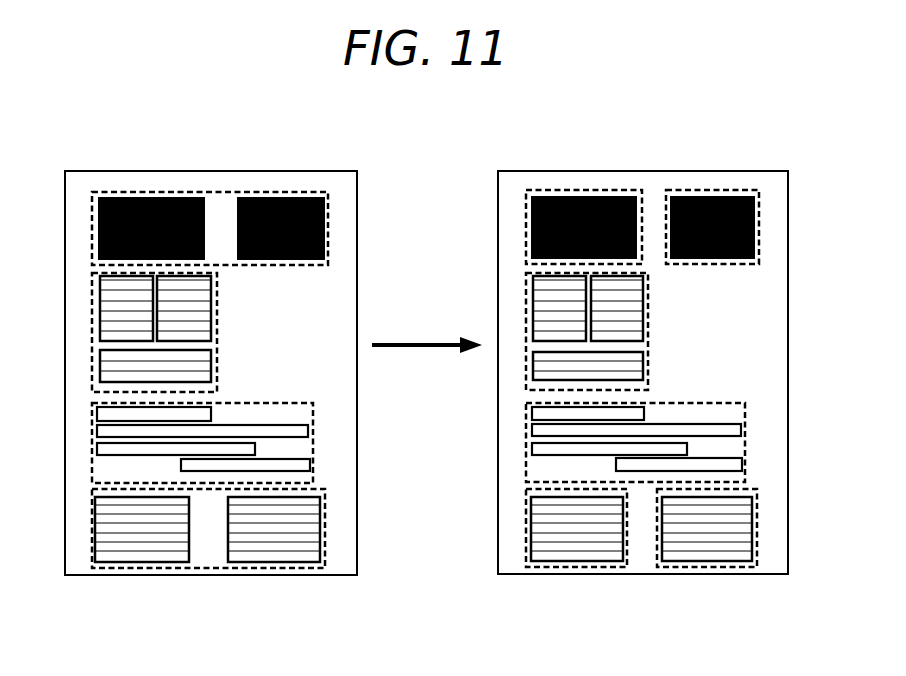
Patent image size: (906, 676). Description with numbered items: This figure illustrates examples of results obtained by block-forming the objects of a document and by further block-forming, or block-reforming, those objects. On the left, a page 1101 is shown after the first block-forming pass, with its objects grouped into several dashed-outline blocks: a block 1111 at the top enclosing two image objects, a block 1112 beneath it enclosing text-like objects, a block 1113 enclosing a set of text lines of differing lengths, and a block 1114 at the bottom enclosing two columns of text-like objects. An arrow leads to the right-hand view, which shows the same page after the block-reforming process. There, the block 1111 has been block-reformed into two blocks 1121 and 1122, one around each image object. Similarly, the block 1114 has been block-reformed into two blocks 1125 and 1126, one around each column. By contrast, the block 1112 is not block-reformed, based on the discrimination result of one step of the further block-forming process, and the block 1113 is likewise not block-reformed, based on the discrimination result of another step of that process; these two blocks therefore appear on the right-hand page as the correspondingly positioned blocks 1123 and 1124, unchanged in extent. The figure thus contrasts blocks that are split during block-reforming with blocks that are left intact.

The page 1101 is at (287, 171).
The block 1111 is at (152, 192).
The block 1112 is at (217, 310).
The block 1113 is at (313, 445).
The block 1114 is at (212, 568).
The block 1121 is at (575, 190).
The block 1122 is at (759, 223).
The text block 1123 is at (648, 333).
The text line block 1124 is at (745, 443).
The block 1125 is at (577, 567).
The block 1126 is at (707, 567).